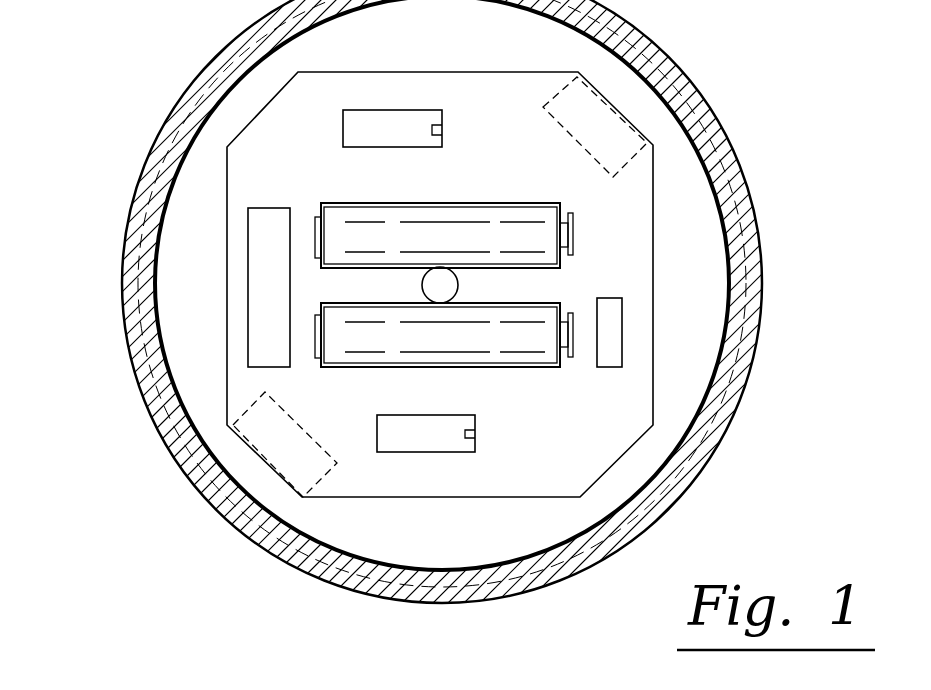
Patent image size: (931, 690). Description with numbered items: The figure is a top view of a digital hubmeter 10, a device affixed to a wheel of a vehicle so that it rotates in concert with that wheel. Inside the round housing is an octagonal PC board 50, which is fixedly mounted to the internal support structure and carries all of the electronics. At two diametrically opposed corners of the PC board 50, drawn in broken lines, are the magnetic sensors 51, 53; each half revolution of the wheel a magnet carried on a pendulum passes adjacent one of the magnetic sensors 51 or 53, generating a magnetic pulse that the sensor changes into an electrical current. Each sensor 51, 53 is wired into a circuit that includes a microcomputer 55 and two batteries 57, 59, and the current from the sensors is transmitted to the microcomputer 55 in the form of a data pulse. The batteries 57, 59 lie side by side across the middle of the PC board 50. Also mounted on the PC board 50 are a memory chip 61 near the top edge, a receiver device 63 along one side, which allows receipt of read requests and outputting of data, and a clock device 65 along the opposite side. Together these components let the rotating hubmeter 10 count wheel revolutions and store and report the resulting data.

The hubmeter 10 is at (155, 83).
The PC board 50 is at (623, 248).
The magnetic sensor 51 is at (287, 415).
The magnetic sensor 53 is at (580, 147).
The microcomputer 55 is at (475, 445).
The battery 57 is at (373, 214).
The battery 59 is at (488, 366).
The memory chip 61 is at (358, 113).
The receiver device 63 is at (252, 267).
The clock device 65 is at (623, 313).